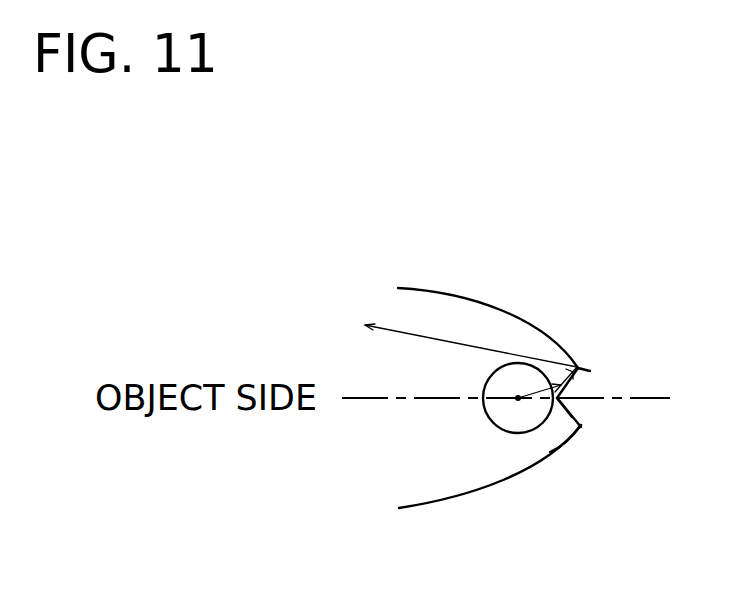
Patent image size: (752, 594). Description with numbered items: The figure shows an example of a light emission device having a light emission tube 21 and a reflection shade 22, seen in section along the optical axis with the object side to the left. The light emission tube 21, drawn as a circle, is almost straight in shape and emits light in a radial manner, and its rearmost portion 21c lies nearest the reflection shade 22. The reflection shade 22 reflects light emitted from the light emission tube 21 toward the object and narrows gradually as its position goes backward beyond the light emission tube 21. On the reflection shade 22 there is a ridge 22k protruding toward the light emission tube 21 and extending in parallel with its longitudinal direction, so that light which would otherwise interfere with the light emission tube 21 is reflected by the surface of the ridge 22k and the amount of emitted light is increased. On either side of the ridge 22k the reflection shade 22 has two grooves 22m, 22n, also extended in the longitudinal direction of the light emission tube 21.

The reflection shade 22 is at (466, 296).
The groove 22m is at (590, 371).
The ridge 22k is at (572, 420).
The groove 22n is at (582, 426).
The light emission tube 21 is at (500, 417).
The rearmost portion 21c is at (553, 401).